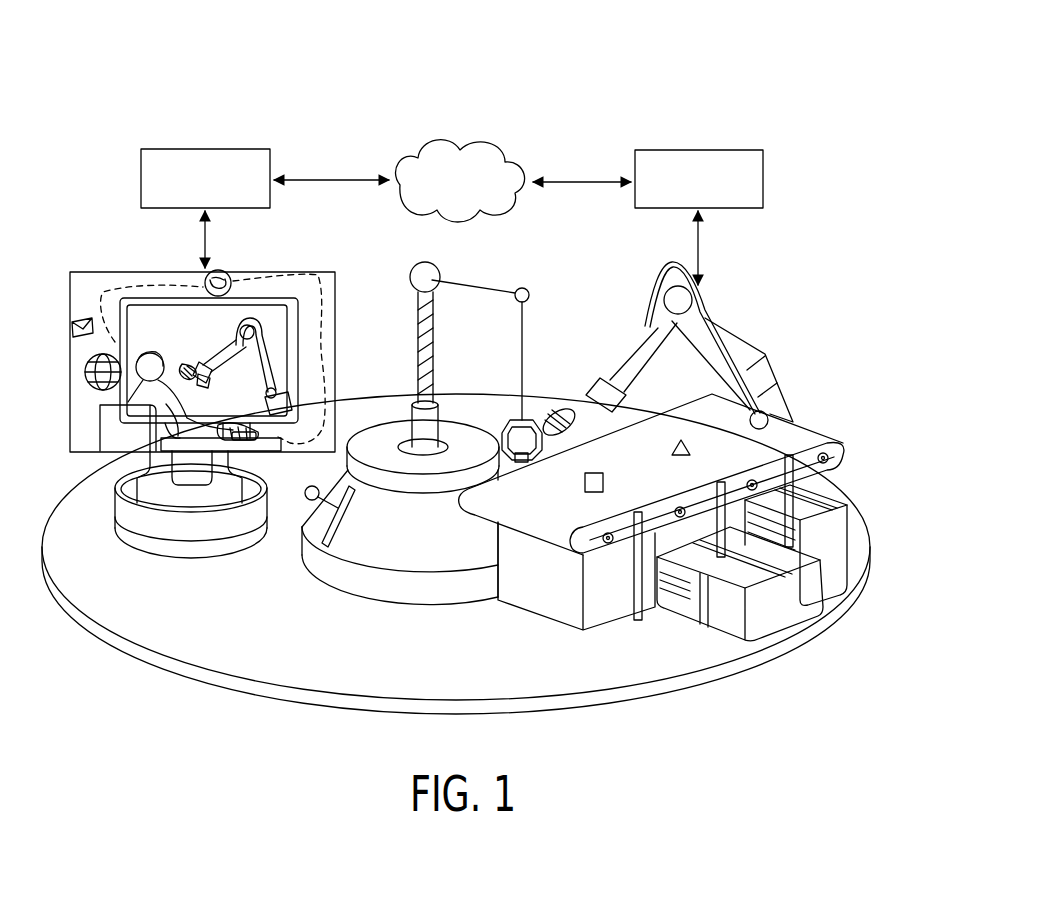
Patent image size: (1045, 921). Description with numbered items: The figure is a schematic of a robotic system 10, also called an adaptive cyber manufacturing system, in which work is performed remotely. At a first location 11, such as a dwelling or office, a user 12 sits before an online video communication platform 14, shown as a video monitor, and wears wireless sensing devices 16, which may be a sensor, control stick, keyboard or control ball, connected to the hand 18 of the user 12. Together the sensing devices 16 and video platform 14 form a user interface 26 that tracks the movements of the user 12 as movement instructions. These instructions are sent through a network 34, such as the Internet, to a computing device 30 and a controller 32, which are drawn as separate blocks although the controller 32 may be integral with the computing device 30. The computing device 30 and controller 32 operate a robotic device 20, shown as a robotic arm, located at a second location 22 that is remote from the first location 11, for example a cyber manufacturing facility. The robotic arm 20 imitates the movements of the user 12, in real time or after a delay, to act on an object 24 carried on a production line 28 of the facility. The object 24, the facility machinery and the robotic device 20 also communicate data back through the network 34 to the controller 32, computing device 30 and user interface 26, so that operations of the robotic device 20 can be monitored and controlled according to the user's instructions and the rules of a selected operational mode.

The robotic system 10 is at (752, 103).
The first location 11 is at (96, 218).
The user 12 is at (98, 438).
The online video communication platform 14 is at (82, 291).
The wireless sensing devices 16 is at (236, 446).
The hand 18 is at (247, 437).
The robotic device 20 is at (667, 297).
The second location 22 is at (866, 661).
The object 24 is at (565, 425).
The user interface 26 is at (352, 302).
The production line 28 is at (553, 532).
The computing device 30 is at (686, 196).
The controller 32 is at (192, 196).
The network 34 is at (448, 196).